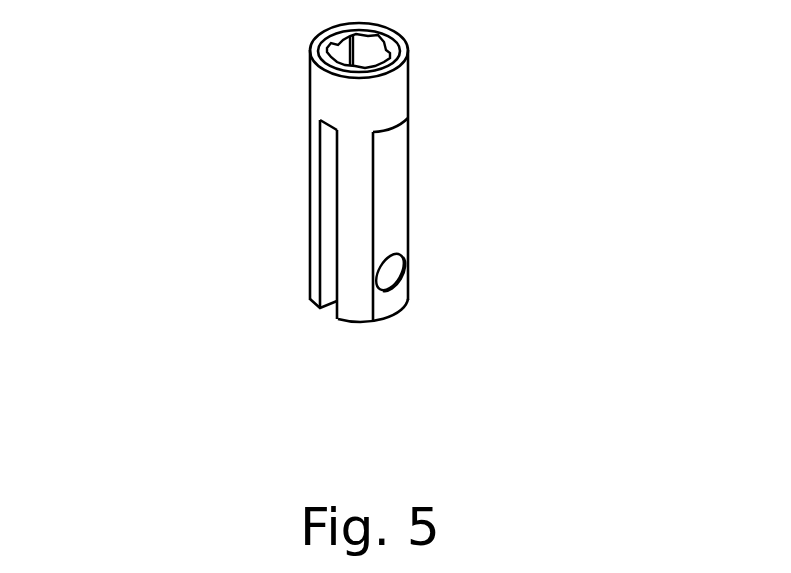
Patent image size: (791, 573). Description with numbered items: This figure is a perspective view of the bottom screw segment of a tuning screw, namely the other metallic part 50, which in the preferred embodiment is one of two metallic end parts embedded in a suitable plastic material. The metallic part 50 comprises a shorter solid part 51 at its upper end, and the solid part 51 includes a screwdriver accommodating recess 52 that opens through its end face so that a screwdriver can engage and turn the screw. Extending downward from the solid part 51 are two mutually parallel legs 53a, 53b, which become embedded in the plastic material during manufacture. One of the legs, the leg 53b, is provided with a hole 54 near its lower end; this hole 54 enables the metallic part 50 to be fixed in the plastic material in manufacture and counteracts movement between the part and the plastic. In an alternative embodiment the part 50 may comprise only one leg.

The other metallic part 50 is at (108, 72).
The shorter solid part 51 is at (386, 105).
The screwdriver accommodating recess 52 is at (340, 45).
The leg 53a is at (313, 317).
The leg 53b is at (360, 328).
The hole 54 is at (408, 270).